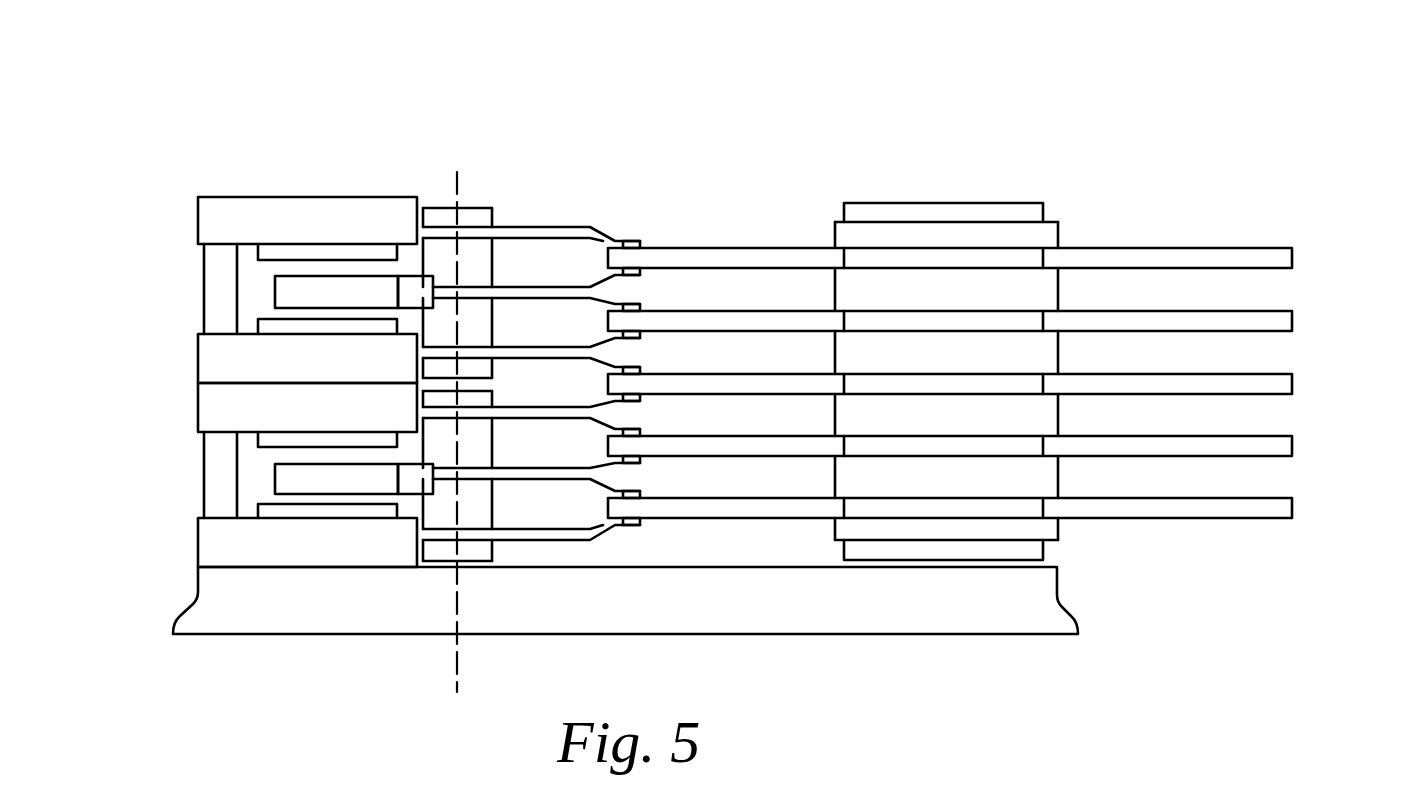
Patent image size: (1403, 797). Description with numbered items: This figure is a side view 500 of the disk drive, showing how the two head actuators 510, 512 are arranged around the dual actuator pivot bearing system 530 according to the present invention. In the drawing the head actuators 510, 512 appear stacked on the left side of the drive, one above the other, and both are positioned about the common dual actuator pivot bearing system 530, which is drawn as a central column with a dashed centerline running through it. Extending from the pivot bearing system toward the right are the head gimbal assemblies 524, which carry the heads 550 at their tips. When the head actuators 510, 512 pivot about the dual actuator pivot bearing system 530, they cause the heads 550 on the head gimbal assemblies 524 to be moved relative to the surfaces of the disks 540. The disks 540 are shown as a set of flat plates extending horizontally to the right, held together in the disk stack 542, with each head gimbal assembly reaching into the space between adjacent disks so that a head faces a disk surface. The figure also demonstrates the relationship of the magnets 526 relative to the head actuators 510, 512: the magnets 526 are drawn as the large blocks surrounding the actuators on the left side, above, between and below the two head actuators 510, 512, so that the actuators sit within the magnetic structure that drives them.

The side view 500 is at (565, 109).
The head actuator 510 is at (275, 286).
The head actuator 512 is at (275, 472).
The head gimbal assemblies 524 is at (607, 238).
The magnets 526 is at (225, 207).
The dual actuator pivot bearing system 530 is at (442, 203).
The disks 540 is at (1297, 248).
The disk stack 542 is at (1057, 212).
The heads 550 is at (642, 243).